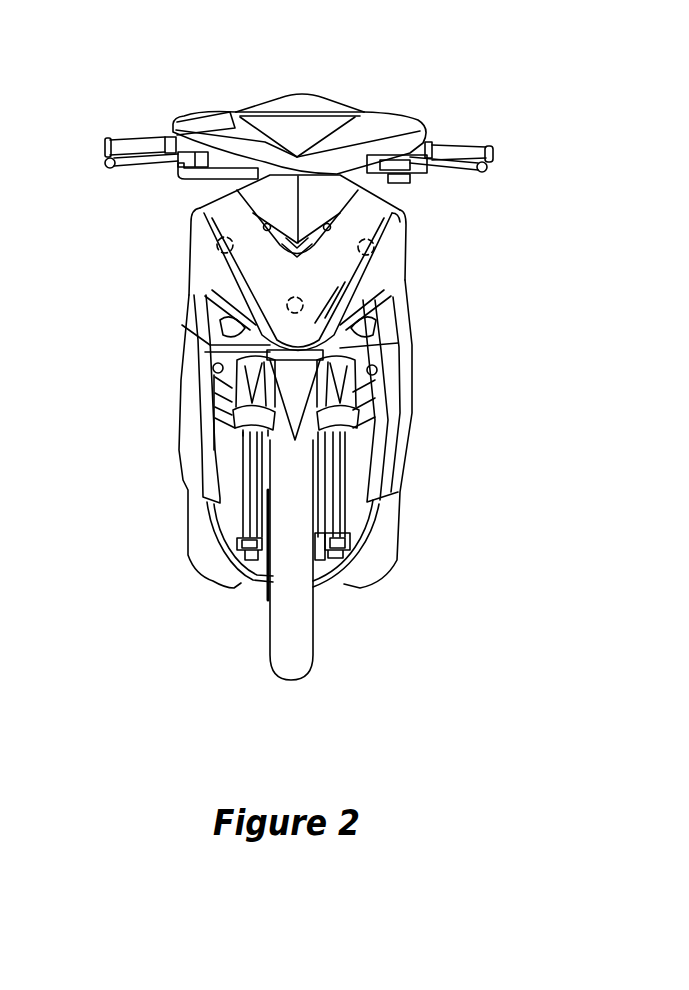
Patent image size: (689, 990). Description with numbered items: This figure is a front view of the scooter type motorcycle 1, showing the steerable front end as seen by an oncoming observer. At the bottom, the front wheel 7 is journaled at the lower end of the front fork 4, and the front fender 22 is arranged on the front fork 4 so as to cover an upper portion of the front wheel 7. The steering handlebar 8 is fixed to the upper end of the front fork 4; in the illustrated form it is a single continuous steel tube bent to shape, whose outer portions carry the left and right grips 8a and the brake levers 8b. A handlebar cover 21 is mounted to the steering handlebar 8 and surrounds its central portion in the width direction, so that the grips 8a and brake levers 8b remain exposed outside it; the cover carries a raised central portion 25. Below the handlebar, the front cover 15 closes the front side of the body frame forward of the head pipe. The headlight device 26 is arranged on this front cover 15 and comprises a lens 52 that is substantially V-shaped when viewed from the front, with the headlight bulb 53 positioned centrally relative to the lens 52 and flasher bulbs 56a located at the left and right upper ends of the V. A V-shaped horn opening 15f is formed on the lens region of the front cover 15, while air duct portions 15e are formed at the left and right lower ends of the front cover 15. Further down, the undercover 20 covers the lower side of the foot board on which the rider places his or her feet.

The scooter type motorcycle 1 is at (527, 73).
The front fork 4 is at (350, 517).
The front wheel 7 is at (313, 633).
The steering handlebar 8 is at (470, 143).
The grip 8a is at (148, 138).
The brake lever 8b is at (107, 167).
The front cover 15 is at (193, 242).
The air duct portion 15e is at (218, 320).
The horn opening 15f is at (342, 212).
The undercover 20 is at (387, 578).
The handlebar cover 21 is at (402, 118).
The front fender 22 is at (242, 388).
The meter visor portion 25 is at (314, 100).
The headlight device 26 is at (384, 253).
The lens 52 is at (232, 258).
The headlight bulb 53 is at (286, 301).
The flasher bulb 56a is at (218, 238).